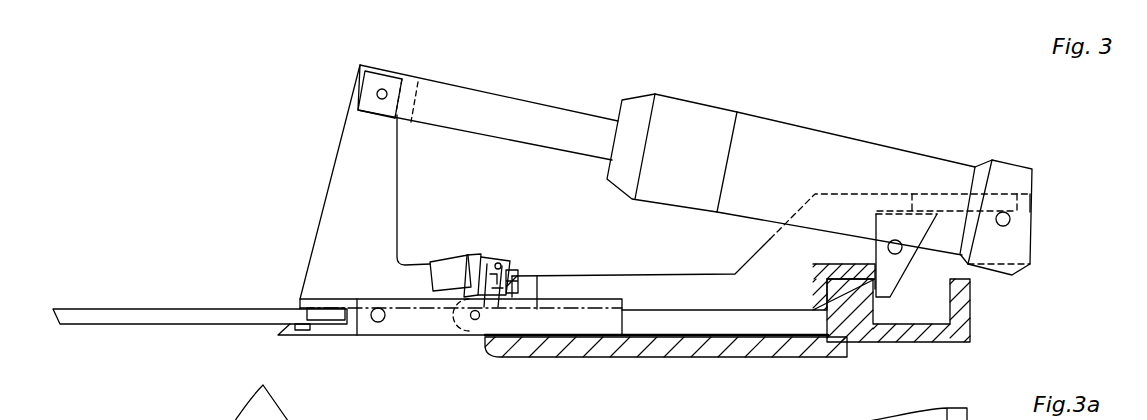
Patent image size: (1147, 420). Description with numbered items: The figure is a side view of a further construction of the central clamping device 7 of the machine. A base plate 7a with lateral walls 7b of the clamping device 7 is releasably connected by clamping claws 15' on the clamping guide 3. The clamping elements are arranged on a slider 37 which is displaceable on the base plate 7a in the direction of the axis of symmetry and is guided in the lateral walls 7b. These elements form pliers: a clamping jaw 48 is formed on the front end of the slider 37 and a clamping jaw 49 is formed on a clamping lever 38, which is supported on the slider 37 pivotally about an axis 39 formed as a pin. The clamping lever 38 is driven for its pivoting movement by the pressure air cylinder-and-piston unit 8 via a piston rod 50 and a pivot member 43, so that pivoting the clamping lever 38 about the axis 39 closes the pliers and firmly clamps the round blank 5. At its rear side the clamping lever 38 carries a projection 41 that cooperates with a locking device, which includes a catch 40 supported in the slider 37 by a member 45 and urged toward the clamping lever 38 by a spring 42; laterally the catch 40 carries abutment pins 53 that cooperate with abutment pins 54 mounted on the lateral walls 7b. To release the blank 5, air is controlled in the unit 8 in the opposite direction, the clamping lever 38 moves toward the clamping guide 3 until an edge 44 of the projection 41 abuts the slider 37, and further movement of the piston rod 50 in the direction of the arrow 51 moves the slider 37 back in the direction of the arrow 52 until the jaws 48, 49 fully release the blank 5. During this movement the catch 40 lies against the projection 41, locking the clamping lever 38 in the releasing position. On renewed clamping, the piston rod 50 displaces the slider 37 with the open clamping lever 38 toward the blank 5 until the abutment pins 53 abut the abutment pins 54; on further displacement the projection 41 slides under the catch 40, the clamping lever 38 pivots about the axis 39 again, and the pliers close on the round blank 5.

The clamping guide 3 is at (963, 332).
The round blank 5 is at (168, 313).
The central clamping device 7 is at (767, 355).
The base plate 7a is at (658, 348).
The lateral walls 7b is at (658, 278).
The pressure air cylinder-and-piston unit 8 is at (803, 143).
The clamping claws 15' is at (998, 262).
The slider 37 is at (422, 322).
The clamping lever 38 is at (348, 173).
The axis 39 is at (378, 322).
The catch 40 is at (472, 263).
The projection 41 is at (466, 256).
The spring 42 is at (523, 273).
The pivot member 43 is at (376, 92).
The edge 44 is at (470, 283).
The member 45 is at (475, 320).
The clamping jaw 48 is at (298, 330).
The clamping jaw 49 is at (298, 305).
The piston rod 50 is at (478, 103).
The arrow 51 is at (575, 90).
The arrow 52 is at (645, 292).
The abutment pins 53 is at (502, 265).
The abutment pins 54 is at (489, 258).